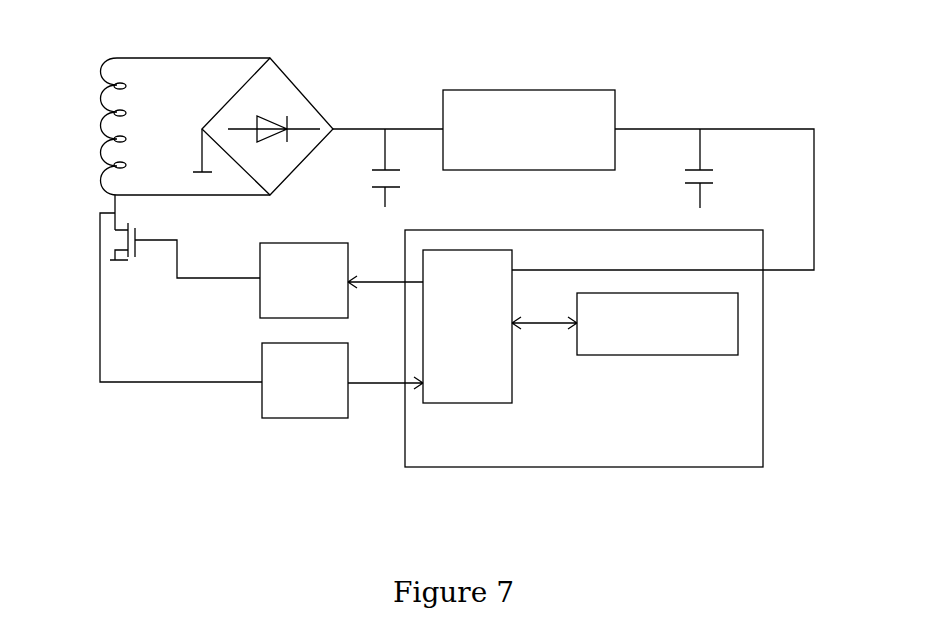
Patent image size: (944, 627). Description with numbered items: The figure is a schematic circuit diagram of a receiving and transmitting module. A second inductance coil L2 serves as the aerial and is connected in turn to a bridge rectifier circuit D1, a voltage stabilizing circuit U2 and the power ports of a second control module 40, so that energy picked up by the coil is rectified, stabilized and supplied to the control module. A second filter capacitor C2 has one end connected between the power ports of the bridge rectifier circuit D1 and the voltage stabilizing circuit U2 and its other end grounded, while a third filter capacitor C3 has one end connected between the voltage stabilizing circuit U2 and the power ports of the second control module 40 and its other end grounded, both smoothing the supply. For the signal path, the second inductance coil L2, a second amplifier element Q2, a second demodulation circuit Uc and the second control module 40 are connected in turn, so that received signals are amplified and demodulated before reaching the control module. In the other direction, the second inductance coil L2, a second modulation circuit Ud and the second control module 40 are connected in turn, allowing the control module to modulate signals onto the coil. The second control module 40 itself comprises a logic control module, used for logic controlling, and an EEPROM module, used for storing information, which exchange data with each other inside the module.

The second inductance coil L2 is at (95, 126).
The bridge rectifier circuit D1 is at (263, 119).
The voltage stabilizing circuit U2 is at (529, 115).
The second filter capacitor C2 is at (402, 170).
The third filter capacitor C3 is at (711, 168).
The second amplifier element Q2 is at (138, 233).
The second demodulation circuit Uc is at (304, 263).
The second modulation circuit Ud is at (305, 401).
The second control module 40 is at (563, 467).